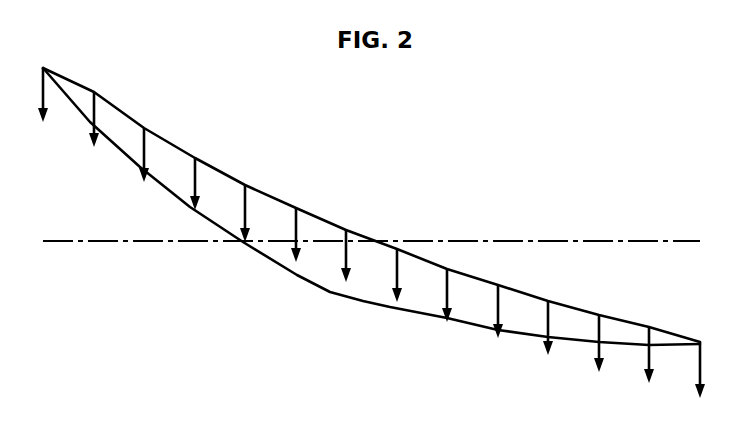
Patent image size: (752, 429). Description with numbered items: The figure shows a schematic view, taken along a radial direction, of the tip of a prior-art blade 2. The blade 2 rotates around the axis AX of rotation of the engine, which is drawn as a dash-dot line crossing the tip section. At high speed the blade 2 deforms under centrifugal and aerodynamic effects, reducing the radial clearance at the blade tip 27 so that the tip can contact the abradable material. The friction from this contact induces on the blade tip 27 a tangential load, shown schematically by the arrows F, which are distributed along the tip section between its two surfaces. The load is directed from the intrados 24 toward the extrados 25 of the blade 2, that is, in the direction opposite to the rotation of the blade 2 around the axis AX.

The blade 2 is at (371, 208).
The intrados 24 is at (327, 217).
The extrados 25 is at (363, 301).
The blade tip 27 is at (382, 278).
The arrows F is at (247, 212).
The axis of rotation AX is at (560, 242).